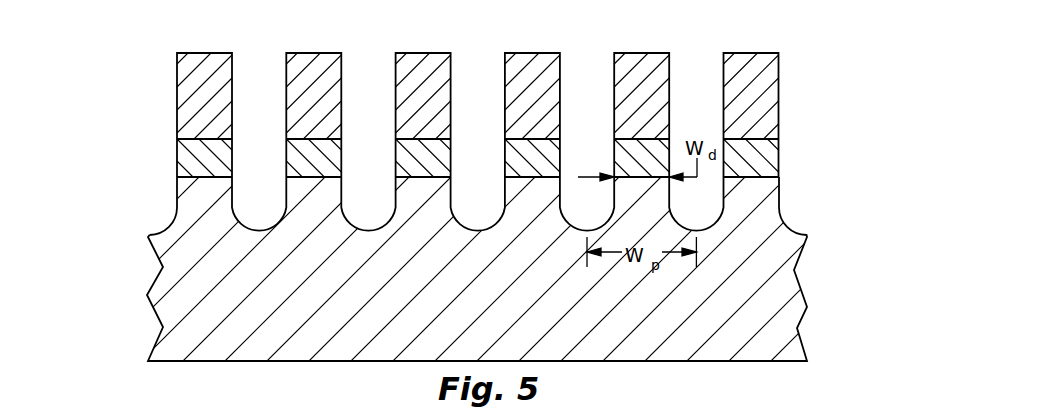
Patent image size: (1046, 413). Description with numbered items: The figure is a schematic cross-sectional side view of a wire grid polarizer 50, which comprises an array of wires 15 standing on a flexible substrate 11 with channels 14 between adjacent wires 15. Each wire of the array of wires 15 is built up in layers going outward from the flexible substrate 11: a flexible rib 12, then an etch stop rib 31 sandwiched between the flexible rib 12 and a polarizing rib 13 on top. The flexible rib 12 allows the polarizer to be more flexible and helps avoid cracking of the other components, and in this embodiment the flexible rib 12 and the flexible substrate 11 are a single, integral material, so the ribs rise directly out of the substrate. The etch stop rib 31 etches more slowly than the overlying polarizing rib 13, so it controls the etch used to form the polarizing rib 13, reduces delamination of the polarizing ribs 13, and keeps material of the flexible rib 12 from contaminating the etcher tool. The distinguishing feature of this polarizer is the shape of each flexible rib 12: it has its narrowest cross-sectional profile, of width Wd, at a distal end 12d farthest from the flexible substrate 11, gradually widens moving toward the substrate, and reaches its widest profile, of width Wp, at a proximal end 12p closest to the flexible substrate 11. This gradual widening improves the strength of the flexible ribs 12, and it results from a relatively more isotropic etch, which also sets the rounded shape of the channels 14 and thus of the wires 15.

The flexible substrate 11 is at (470, 310).
The flexible rib 12 is at (763, 214).
The distal end 12d is at (767, 178).
The proximal end 12p is at (777, 235).
The polarizing rib 13 is at (763, 108).
The channel 14 is at (353, 147).
The array of wires 15 is at (135, 145).
The etch stop rib 31 is at (763, 169).
The wire grid polarizer 50 is at (856, 322).